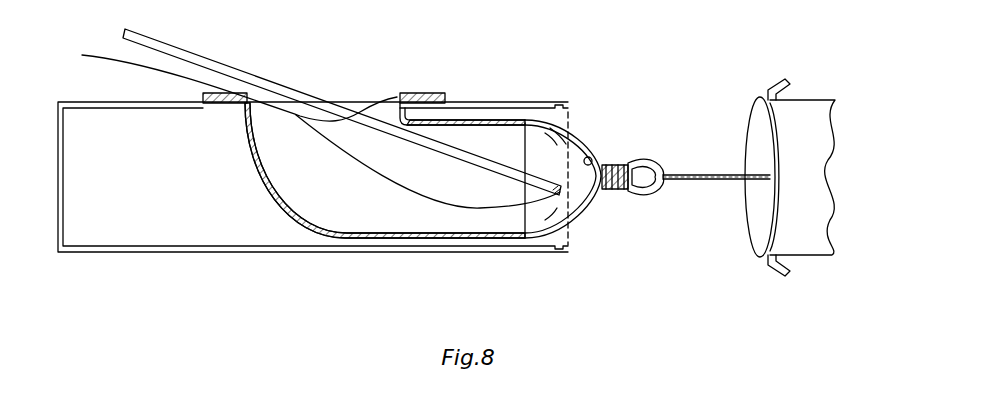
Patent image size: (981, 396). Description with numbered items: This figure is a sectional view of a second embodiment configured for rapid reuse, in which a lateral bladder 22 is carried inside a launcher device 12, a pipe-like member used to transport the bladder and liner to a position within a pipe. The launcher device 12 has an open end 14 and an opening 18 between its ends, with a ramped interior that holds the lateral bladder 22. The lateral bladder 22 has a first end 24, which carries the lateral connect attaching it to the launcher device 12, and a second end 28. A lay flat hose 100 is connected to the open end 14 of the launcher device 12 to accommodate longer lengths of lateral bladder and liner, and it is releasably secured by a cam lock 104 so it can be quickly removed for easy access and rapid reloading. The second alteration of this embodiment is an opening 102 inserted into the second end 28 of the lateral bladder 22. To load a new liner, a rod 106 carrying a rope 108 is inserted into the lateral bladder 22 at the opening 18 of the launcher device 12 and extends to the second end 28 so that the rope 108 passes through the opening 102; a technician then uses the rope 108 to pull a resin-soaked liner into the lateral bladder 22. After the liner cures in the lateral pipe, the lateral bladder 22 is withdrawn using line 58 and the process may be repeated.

The launcher device 12 is at (228, 268).
The open end 14 is at (568, 99).
The opening 18 is at (388, 101).
The lateral bladder 22 is at (273, 205).
The first end 24 is at (210, 105).
The second end 28 is at (590, 212).
The line 58 is at (737, 171).
The lay flat hose 100 is at (818, 104).
The opening 102 is at (592, 158).
The cam lock 104 is at (776, 86).
The rod 106 is at (227, 65).
The rope 108 is at (391, 178).